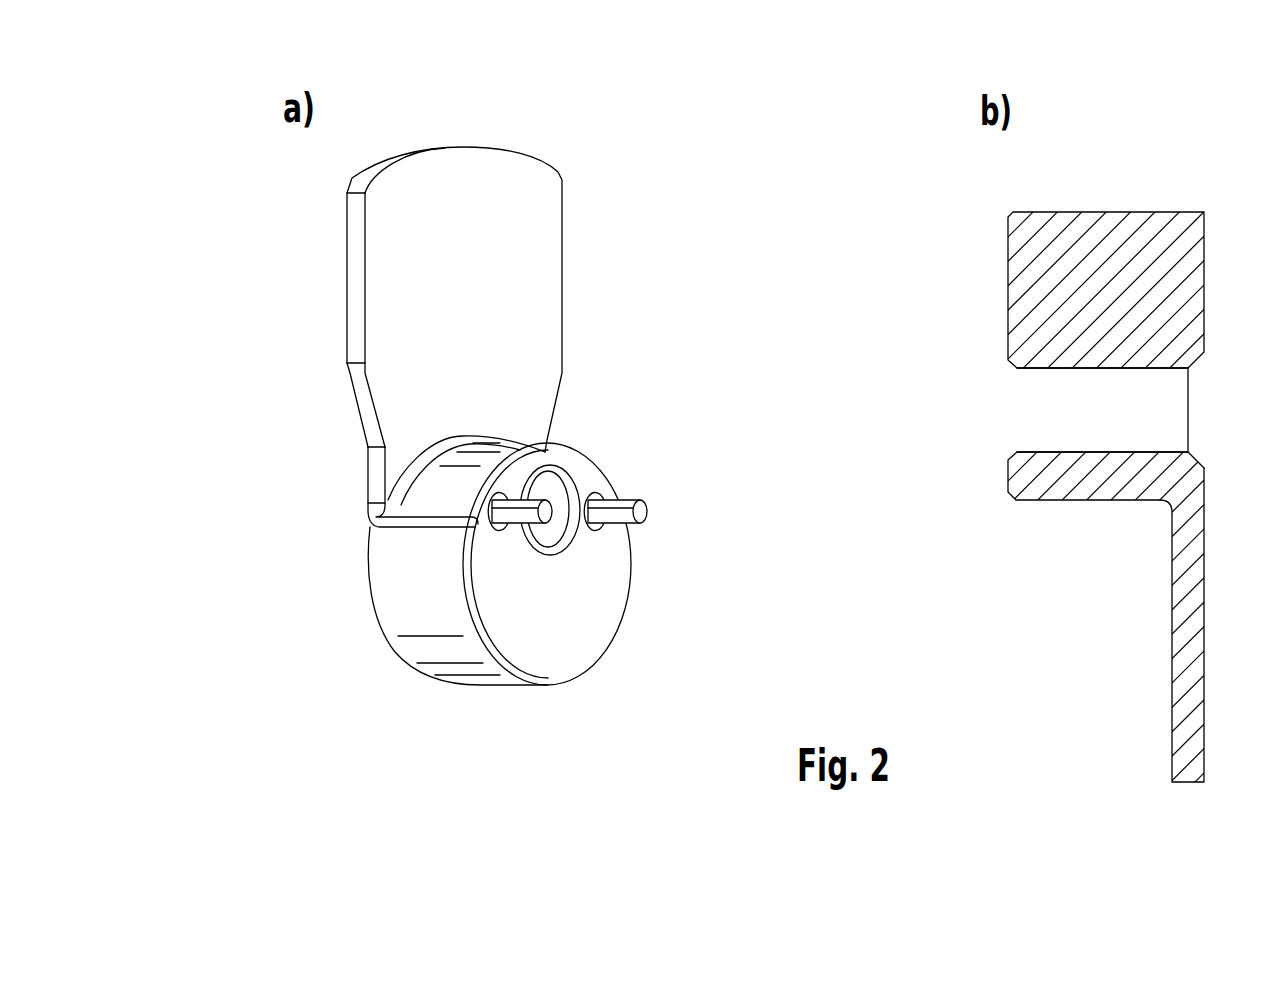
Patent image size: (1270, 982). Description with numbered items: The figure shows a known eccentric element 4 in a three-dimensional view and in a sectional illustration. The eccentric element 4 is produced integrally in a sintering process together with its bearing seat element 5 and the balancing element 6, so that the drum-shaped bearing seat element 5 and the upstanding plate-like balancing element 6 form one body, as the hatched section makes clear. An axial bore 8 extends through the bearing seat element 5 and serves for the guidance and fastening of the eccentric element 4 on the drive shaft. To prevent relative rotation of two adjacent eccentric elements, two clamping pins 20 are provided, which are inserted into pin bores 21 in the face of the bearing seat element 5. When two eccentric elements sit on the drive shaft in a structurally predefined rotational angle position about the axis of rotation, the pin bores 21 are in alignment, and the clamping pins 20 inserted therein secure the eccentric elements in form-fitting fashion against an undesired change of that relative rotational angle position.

The eccentric element 4 is at (328, 529).
The bearing seat element 5 is at (568, 652).
The balancing element 6 is at (537, 261).
The axial bore 8 is at (550, 487).
The clamping pin 20 is at (624, 502).
The pin bore 21 is at (601, 503).